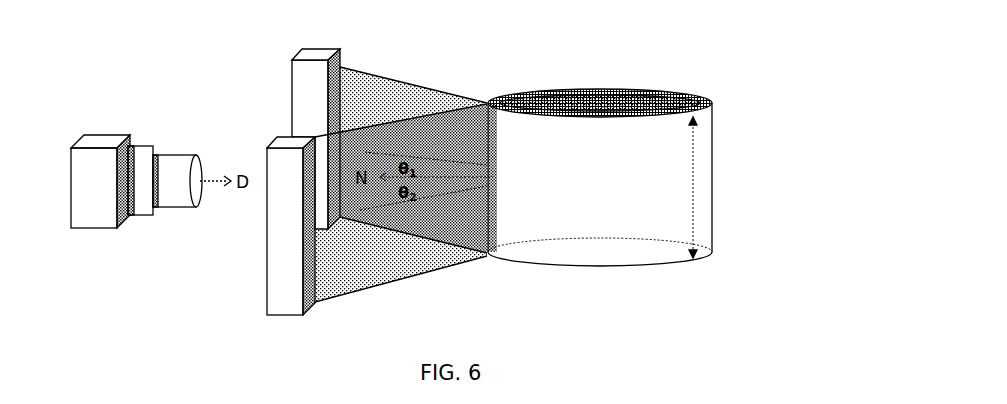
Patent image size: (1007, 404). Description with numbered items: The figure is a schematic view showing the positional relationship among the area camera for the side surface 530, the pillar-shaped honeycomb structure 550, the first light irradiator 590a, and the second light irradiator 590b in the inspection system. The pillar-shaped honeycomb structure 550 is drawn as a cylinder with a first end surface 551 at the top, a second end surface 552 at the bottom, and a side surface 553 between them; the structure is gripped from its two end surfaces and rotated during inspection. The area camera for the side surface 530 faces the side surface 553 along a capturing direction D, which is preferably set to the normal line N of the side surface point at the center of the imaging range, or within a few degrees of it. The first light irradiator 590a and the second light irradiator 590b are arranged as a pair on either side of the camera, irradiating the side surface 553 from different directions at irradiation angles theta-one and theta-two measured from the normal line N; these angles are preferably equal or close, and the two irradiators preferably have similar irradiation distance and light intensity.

The area camera for the side surface 530 is at (97, 133).
The first light irradiator 590a is at (297, 52).
The second light irradiator 590b is at (281, 137).
The pillar-shaped honeycomb structure 550 is at (635, 171).
The first end surface 551 is at (690, 100).
The second end surface 552 is at (530, 266).
The side surface 553 is at (713, 170).